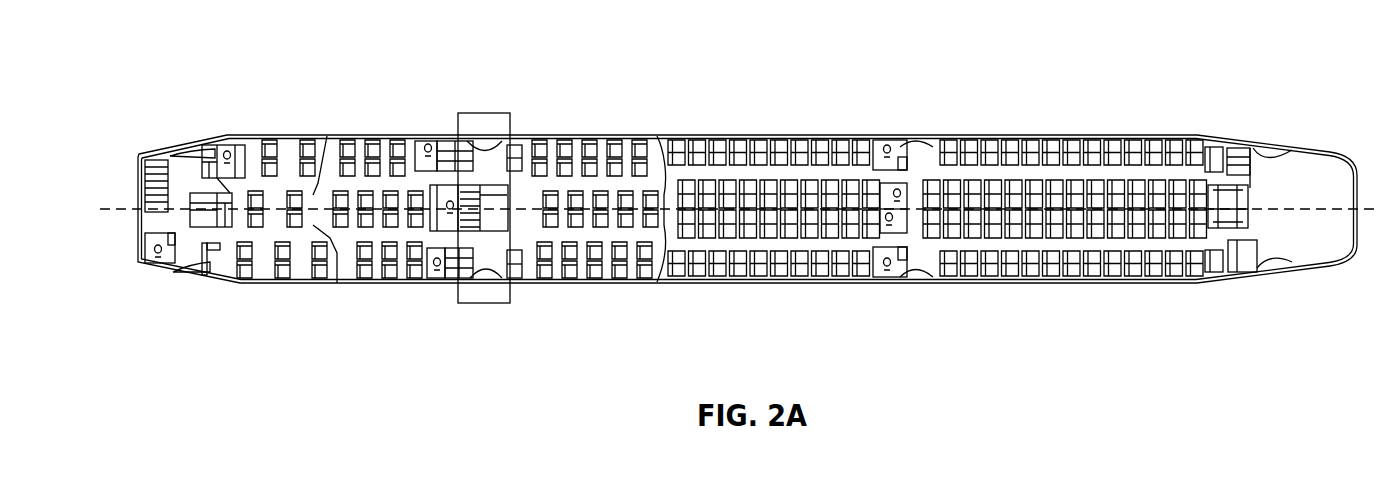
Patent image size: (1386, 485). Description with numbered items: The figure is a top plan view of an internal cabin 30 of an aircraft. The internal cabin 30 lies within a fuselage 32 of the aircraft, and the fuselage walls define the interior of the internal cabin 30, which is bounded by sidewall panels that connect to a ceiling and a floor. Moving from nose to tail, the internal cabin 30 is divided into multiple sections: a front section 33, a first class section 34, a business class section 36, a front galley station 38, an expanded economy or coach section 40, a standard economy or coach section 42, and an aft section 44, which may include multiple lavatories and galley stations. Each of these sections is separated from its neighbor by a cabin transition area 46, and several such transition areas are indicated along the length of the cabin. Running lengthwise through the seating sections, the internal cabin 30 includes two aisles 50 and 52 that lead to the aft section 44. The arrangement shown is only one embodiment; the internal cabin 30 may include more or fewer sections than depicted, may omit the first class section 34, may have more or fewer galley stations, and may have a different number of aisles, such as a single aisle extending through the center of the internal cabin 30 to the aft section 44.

The internal cabin 30 is at (273, 41).
The fuselage 32 is at (602, 95).
The front section 33 is at (196, 298).
The first class section 34 is at (292, 283).
The business class section 36 is at (363, 137).
The front galley station 38 is at (483, 298).
The expanded economy or coach section 40 is at (585, 285).
The standard economy or coach section 42 is at (713, 135).
The aft section 44 is at (1278, 162).
The cabin transition area 46 is at (212, 137).
The aisle 50 is at (1072, 173).
The aisle 52 is at (1090, 245).